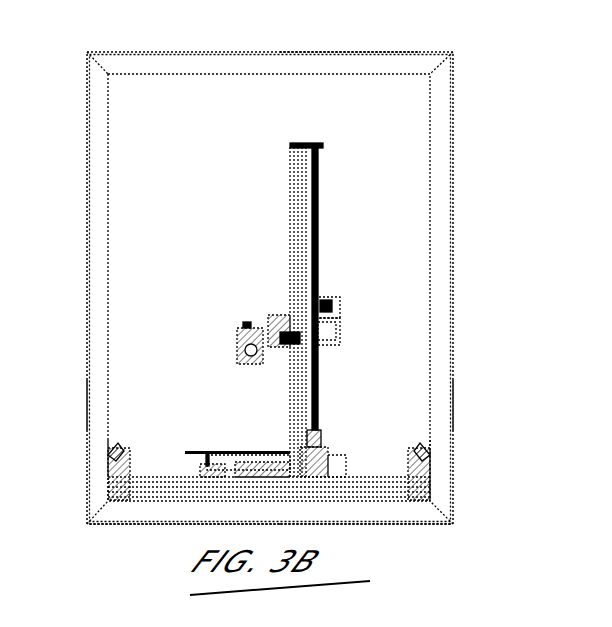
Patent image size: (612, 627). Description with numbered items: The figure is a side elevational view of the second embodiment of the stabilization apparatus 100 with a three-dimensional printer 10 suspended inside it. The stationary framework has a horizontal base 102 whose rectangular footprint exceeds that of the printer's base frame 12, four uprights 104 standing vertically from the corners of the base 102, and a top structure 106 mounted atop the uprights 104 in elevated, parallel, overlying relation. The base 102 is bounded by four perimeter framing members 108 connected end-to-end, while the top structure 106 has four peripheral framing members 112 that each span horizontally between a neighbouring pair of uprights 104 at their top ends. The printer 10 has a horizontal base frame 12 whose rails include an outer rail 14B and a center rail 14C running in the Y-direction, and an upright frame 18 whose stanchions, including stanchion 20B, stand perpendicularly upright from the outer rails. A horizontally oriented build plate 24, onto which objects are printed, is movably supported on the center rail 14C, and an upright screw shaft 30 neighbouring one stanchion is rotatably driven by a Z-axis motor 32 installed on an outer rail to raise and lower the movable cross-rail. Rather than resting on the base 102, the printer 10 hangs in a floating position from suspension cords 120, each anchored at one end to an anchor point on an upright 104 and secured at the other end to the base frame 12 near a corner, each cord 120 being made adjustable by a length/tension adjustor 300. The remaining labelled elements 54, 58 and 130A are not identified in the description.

The 3D printer 10 is at (256, 192).
The horizontal base frame 12 is at (352, 470).
The outer rail 14B is at (195, 500).
The center rail 14C is at (204, 455).
The upright frame 18 is at (289, 230).
The stanchion 20B is at (290, 278).
The build plate 24 is at (233, 455).
The screw shaft 30 is at (318, 195).
The Z-axis motor 32 is at (320, 447).
The carriage motor 54 is at (238, 350).
The carriage block 58 is at (334, 296).
The stabilization apparatus 100 is at (494, 116).
The horizontal base 102 is at (148, 524).
The uprights 104 is at (88, 187).
The top structure 106 is at (347, 52).
The perimeter framing members 108 is at (400, 525).
The peripheral framing members 112 is at (190, 72).
The suspension cords 120 is at (120, 478).
The side panel 130A is at (88, 405).
The length/tension adjustor 300 is at (108, 455).